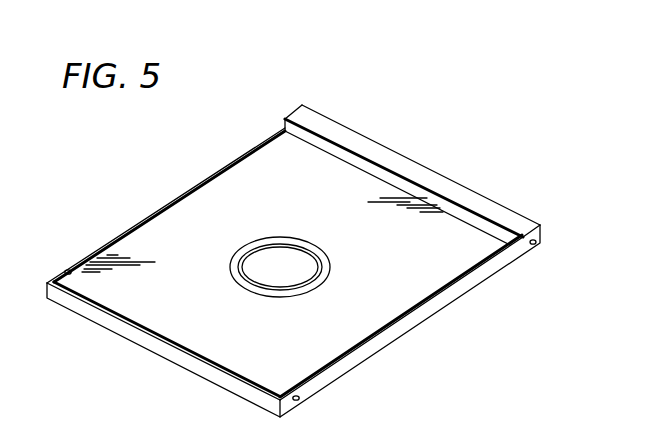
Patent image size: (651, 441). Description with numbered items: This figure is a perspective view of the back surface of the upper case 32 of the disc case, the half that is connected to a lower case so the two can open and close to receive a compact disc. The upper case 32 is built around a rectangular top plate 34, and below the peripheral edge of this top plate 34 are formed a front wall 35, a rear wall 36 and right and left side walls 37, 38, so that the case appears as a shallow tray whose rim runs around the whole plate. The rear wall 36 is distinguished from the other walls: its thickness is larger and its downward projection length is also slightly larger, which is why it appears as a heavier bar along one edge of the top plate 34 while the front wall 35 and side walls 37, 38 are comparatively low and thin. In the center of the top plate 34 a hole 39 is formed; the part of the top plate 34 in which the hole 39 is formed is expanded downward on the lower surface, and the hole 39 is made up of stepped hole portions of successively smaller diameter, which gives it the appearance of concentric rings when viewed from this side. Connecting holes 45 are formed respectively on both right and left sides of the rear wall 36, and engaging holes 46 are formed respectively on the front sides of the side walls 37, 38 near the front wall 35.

The upper case 32 is at (98, 324).
The top plate 34 is at (378, 279).
The front wall 35 is at (158, 353).
The rear wall 36 is at (445, 183).
The side wall 37 is at (122, 233).
The side wall 38 is at (450, 305).
The hole 39 is at (263, 254).
The connecting hole 45 is at (537, 241).
The engaging hole 46 is at (68, 272).